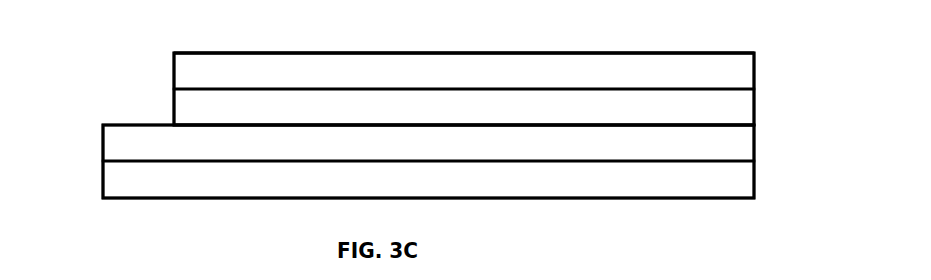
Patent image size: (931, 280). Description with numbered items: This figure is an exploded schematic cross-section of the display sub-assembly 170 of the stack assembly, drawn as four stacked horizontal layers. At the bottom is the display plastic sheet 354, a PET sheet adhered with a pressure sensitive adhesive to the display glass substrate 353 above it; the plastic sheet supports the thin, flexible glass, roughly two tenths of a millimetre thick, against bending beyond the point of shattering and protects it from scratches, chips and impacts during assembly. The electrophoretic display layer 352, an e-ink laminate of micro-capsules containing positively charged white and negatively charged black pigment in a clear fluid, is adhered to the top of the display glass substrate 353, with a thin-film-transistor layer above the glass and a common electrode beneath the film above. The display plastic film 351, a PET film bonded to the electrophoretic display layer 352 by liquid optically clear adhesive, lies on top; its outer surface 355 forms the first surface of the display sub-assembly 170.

The display sub-assembly 170 is at (85, 55).
The display plastic film 351 is at (754, 70).
The electrophoretic display layer 352 is at (754, 106).
The display glass substrate 353 is at (754, 142).
The display plastic sheet 354 is at (754, 178).
The surface 355 is at (247, 53).